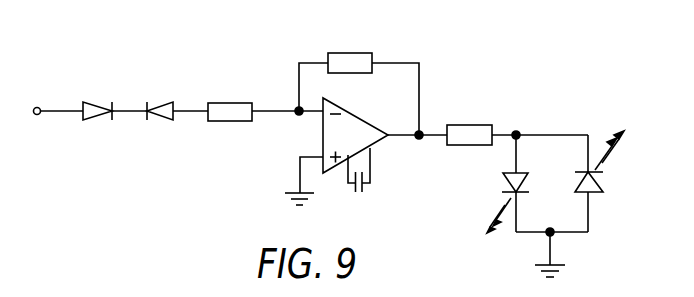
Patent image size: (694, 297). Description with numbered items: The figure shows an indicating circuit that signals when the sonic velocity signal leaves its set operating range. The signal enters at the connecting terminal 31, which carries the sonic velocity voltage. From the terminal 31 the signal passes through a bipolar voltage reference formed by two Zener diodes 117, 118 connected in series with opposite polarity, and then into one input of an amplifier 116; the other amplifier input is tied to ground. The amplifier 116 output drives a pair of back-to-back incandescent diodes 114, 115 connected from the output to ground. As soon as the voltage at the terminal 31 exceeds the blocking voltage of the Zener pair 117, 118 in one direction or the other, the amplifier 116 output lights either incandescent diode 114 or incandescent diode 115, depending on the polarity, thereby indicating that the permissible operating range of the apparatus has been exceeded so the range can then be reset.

The connecting terminal 31 is at (37, 106).
The light emitting diode 114 is at (503, 178).
The light emitting diode 115 is at (603, 185).
The operational amplifier 116 is at (358, 128).
The diode 117 is at (86, 101).
The diode 118 is at (152, 101).